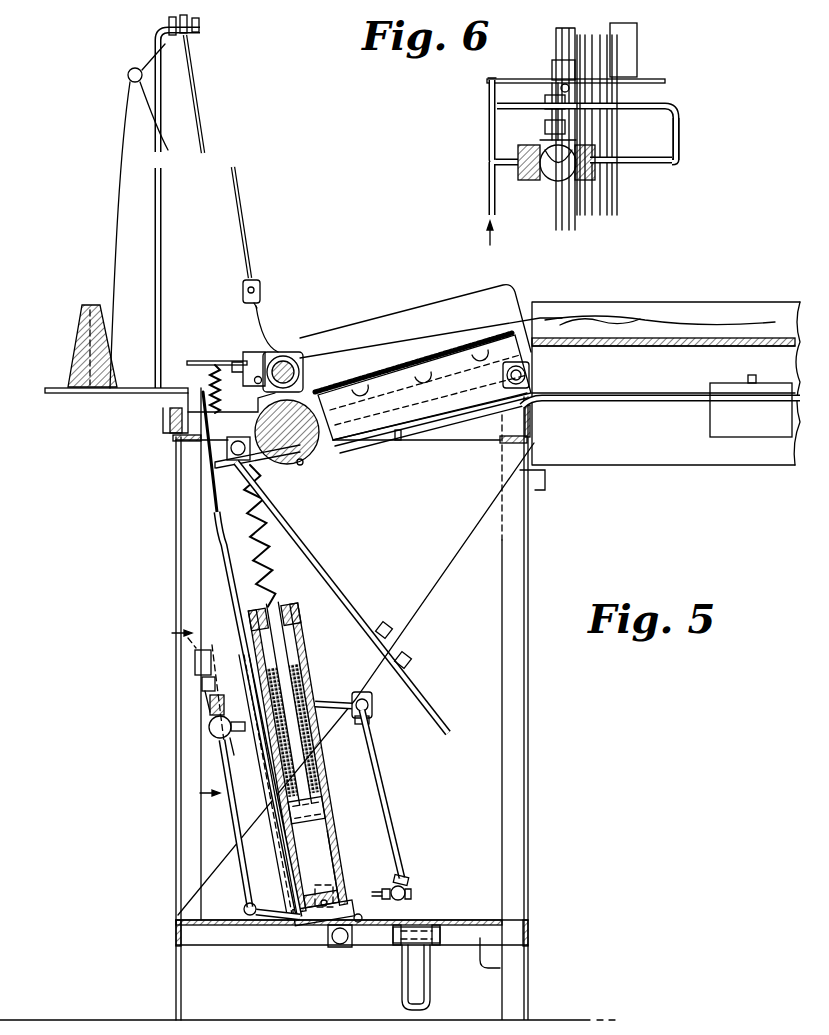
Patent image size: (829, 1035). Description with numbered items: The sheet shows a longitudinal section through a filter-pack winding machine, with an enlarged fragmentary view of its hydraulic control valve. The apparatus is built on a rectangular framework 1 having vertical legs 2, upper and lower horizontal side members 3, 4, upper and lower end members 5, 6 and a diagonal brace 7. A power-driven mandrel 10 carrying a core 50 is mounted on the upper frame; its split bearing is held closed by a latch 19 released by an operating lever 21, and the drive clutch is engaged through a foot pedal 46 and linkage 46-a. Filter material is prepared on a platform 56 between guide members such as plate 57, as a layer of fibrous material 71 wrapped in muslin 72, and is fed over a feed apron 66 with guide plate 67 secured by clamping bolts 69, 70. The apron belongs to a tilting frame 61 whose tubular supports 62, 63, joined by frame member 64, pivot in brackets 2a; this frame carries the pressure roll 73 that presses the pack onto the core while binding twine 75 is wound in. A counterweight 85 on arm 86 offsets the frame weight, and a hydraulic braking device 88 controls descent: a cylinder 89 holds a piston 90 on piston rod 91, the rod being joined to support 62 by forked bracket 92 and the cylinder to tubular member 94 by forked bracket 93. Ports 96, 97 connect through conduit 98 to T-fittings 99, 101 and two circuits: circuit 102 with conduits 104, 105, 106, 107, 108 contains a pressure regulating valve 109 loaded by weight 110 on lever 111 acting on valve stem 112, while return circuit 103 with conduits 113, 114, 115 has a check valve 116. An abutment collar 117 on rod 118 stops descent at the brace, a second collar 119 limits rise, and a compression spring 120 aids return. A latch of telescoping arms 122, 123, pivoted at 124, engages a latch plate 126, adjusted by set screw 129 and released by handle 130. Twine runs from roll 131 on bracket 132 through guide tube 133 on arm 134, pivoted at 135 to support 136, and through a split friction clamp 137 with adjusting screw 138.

In FIG. 5, the rectangular framework 1 is at (533, 823).
In FIG. 5, the vertical legs 2 is at (517, 732).
In FIG. 5, the brackets 2a is at (523, 410).
In FIG. 5, the upper horizontal side member 3 is at (172, 436).
In FIG. 5, the lower horizontal side member 4 is at (177, 934).
In FIG. 5, the upper end member 5 is at (440, 433).
In FIG. 5, the lower end member 6 is at (540, 970).
In FIG. 5, the diagonal brace 7 is at (445, 522).
In FIG. 5, the mandrel 10 is at (305, 368).
In FIG. 5, the latch 19 is at (248, 355).
In FIG. 5, the operating lever 21 is at (193, 362).
In FIG. 5, the foot pedal 46 is at (418, 995).
In FIG. 5, the linkage 46-a is at (412, 988).
In FIG. 5, the core 50 is at (290, 352).
In FIG. 5, the platform 56 is at (697, 345).
In FIG. 5, the guide member 57 is at (722, 310).
In FIG. 5, the tilting frame 61 is at (397, 442).
In FIG. 5, the tubular support 62 is at (235, 446).
In FIG. 5, the tubular support 63 is at (527, 372).
In FIG. 5, the frame member 64 is at (337, 442).
In FIG. 5, the feed apron 66 is at (432, 367).
In FIG. 5, the guide plate 67 is at (417, 327).
In FIG. 5, the clamping bolt 69 is at (372, 385).
In FIG. 5, the clamping bolt 70 is at (470, 347).
In FIG. 5, the fibrous material 71 is at (575, 320).
In FIG. 5, the textile material 72 is at (635, 328).
In FIG. 5, the pressure roll 73 is at (290, 464).
In FIG. 5, the binding twine 75 is at (120, 200).
In FIG. 5, the counterweight 85 is at (762, 430).
In FIG. 5, the arm 86 is at (658, 400).
In FIG. 5, the hydraulic braking device 88 is at (340, 772).
In FIG. 5, the cylinder 89 is at (345, 838).
In FIG. 6, the cylinder 89 is at (612, 193).
In FIG. 5, the piston 90 is at (336, 804).
In FIG. 5, the piston rod 91 is at (283, 648).
In FIG. 5, the forked bracket 92 is at (235, 462).
In FIG. 5, the forked bracket 93 is at (320, 930).
In FIG. 5, the tubular frame member 94 is at (348, 930).
In FIG. 5, the port 96 is at (313, 700).
In FIG. 6, the port 96 is at (638, 60).
In FIG. 5, the port 97 is at (360, 918).
In FIG. 5, the conduit 98 is at (368, 698).
In FIG. 5, the T-fitting 99 is at (372, 710).
In FIG. 6, the T-fitting 99 is at (613, 132).
In FIG. 5, the T-fitting 101 is at (353, 874).
In FIG. 5, the fluid circuit 102 is at (236, 857).
In FIG. 5, the fluid circuit 103 is at (400, 825).
In FIG. 5, the conduit 104 is at (277, 920).
In FIG. 5, the conduit 105 is at (247, 883).
In FIG. 6, the conduit 105 is at (485, 180).
In FIG. 6, the conduit 106 is at (643, 167).
In FIG. 6, the conduit 107 is at (680, 135).
In FIG. 6, the conduit 108 is at (640, 104).
In FIG. 5, the pressure regulating valve 109 is at (209, 730).
In FIG. 6, the pressure regulating valve 109 is at (548, 183).
In FIG. 5, the weight 110 is at (196, 655).
In FIG. 6, the weight 110 is at (637, 33).
In FIG. 6, the lever 111 is at (665, 80).
In FIG. 6, the valve stem 112 is at (552, 90).
In FIG. 6, the conduit 113 is at (517, 102).
In FIG. 5, the conduit 114 is at (380, 751).
In FIG. 6, the conduit 114 is at (485, 136).
In FIG. 5, the conduit 115 is at (403, 903).
In FIG. 5, the check valve 116 is at (386, 906).
In FIG. 5, the abutment collar 117 is at (391, 628).
In FIG. 5, the rod 118 is at (333, 567).
In FIG. 5, the abutment collar 119 is at (406, 660).
In FIG. 5, the compression spring 120 is at (267, 543).
In FIG. 5, the upper latch arm 122 is at (225, 575).
In FIG. 6, the upper latch arm 122 is at (552, 48).
In FIG. 5, the lower latch arm 123 is at (255, 752).
In FIG. 6, the lower latch arm 123 is at (580, 220).
In FIG. 5, the pivotal connection 124 is at (295, 921).
In FIG. 5, the latch plate 126 is at (230, 456).
In FIG. 5, the set screw 129 is at (204, 684).
In FIG. 5, the operating handle 130 is at (200, 392).
In FIG. 5, the roll 131 is at (88, 330).
In FIG. 5, the bracket 132 is at (60, 394).
In FIG. 5, the guide tube 133 is at (244, 240).
In FIG. 5, the arm 134 is at (207, 143).
In FIG. 5, the universal pivotal connection 135 is at (195, 32).
In FIG. 5, the upstanding support 136 is at (163, 216).
In FIG. 5, the split friction clamp 137 is at (262, 284).
In FIG. 5, the adjusting screw 138 is at (246, 291).